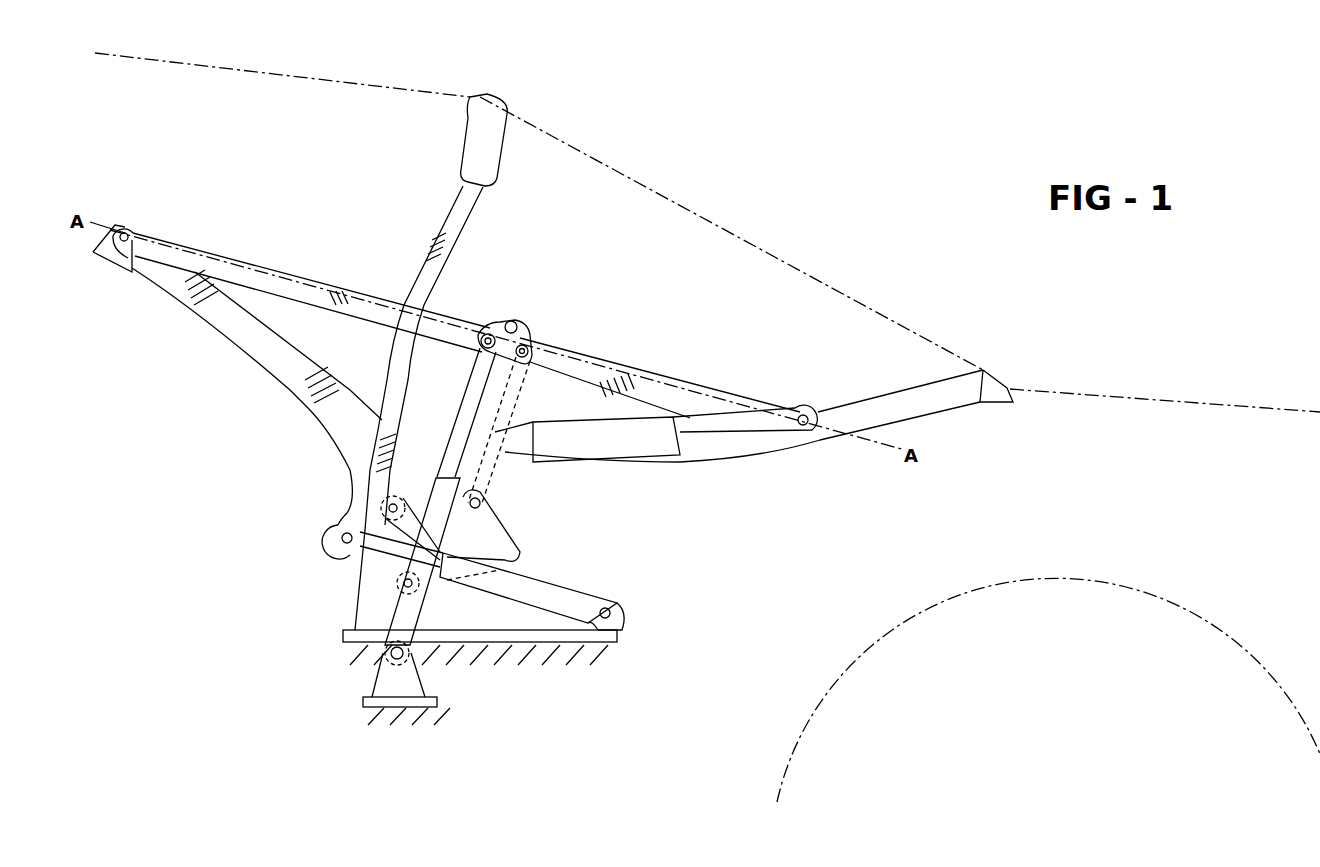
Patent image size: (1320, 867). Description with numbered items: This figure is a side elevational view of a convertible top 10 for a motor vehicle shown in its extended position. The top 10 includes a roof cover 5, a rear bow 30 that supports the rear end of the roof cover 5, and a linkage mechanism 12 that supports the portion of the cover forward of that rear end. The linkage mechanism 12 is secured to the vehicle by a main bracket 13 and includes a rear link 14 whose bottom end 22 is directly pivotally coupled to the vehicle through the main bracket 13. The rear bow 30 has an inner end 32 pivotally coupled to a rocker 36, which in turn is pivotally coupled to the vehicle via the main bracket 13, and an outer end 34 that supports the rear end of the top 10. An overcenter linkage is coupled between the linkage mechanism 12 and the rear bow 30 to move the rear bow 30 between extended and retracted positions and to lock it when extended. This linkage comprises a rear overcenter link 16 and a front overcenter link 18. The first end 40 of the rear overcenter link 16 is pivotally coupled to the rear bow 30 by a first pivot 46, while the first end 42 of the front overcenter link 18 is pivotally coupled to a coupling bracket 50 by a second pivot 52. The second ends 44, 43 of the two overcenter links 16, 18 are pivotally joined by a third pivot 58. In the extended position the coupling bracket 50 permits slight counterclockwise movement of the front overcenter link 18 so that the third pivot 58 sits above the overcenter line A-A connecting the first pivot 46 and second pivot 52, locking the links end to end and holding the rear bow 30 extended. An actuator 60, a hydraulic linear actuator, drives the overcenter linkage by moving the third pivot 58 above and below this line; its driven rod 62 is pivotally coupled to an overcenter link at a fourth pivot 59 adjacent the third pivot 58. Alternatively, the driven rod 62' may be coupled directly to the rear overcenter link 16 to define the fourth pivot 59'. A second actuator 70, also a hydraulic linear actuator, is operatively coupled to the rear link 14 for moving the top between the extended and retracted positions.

The roof cover 5 is at (745, 235).
The convertible top 10 is at (652, 122).
The linkage mechanism 12 is at (108, 340).
The main bracket 13 is at (520, 644).
The rear link 14 is at (245, 330).
The rear overcenter link 16 is at (676, 420).
The front overcenter link 18 is at (305, 287).
The bottom end 22 is at (335, 428).
The rear bow 30 is at (820, 440).
The inner end 32 is at (518, 447).
The outer end 34 is at (1015, 393).
The rocker 36 is at (495, 518).
The first end 40 is at (780, 418).
The first end 42 is at (186, 258).
The second end 43 is at (465, 340).
The second end 44 is at (545, 356).
The first pivot 46 is at (814, 416).
The coupling bracket 50 is at (110, 258).
The second pivot 52 is at (128, 232).
The third pivot 58 is at (515, 321).
The fourth pivot 59 is at (497, 304).
The fourth pivot 59' is at (547, 316).
The actuator 60 is at (415, 600).
The driven rod 62 is at (459, 412).
The driven rod 62' is at (523, 430).
The second actuator 70 is at (570, 598).